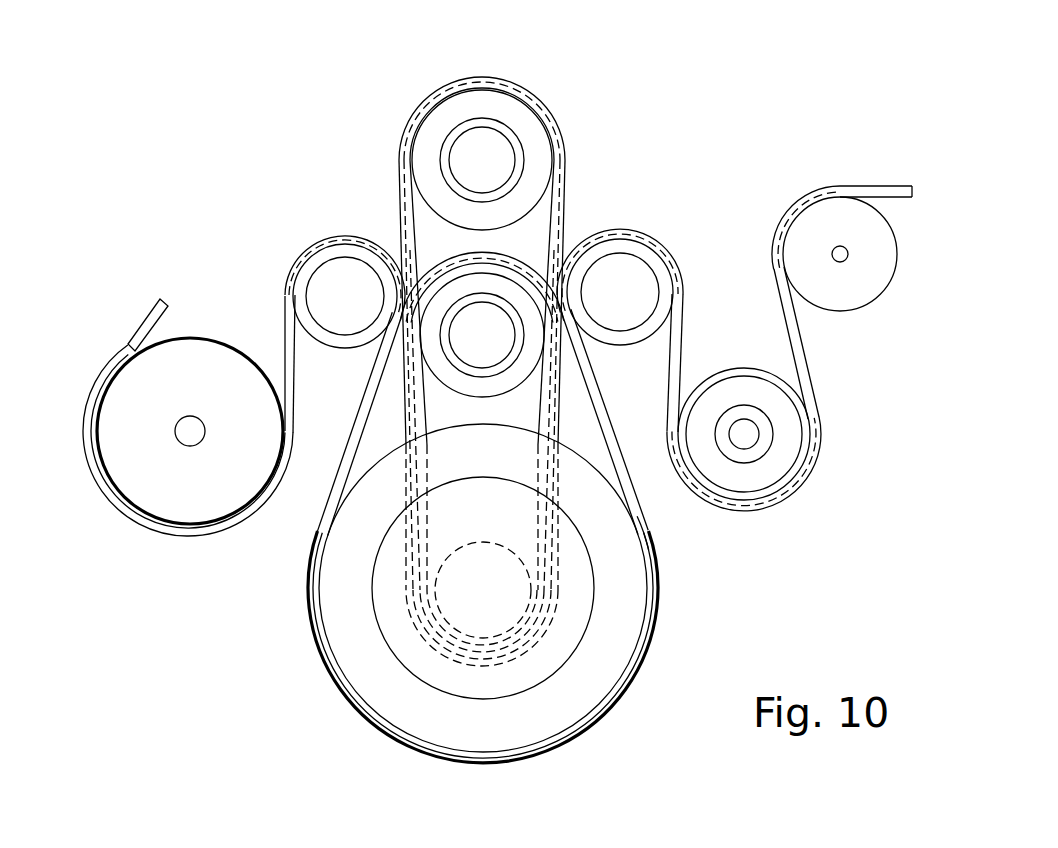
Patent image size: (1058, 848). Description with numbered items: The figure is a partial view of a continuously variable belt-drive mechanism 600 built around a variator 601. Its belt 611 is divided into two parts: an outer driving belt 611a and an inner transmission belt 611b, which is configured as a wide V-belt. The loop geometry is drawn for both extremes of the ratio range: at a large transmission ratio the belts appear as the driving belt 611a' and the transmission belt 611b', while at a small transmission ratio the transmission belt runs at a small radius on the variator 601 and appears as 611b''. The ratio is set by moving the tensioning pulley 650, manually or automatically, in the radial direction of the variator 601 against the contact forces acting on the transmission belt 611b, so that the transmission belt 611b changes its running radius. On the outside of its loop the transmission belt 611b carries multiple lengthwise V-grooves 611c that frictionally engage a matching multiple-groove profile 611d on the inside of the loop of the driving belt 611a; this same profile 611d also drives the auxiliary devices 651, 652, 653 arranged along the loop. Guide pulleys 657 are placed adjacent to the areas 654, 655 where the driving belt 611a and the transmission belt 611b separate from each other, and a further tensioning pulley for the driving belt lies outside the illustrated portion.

The belt-drive mechanism 600 is at (672, 52).
The variator 601 is at (347, 628).
The belt 611 is at (320, 474).
The driving belt 611a is at (489, 647).
The driving belt at large transmission ratio 611a' is at (475, 645).
The transmission belt 611b is at (472, 395).
The transmission belt at large transmission ratio 611b' is at (655, 633).
The transmission belt at small transmission ratio 611b'' is at (593, 604).
The lengthwise V-grooves 611c is at (567, 167).
The multiple-groove profile 611d is at (342, 230).
The tensioning pulley 650 is at (520, 118).
The auxiliary device 651 is at (183, 487).
The auxiliary device 652 is at (780, 468).
The auxiliary device 653 is at (855, 287).
The separation area 654 is at (358, 374).
The separation area 655 is at (604, 370).
The guide pulley 657 is at (617, 272).